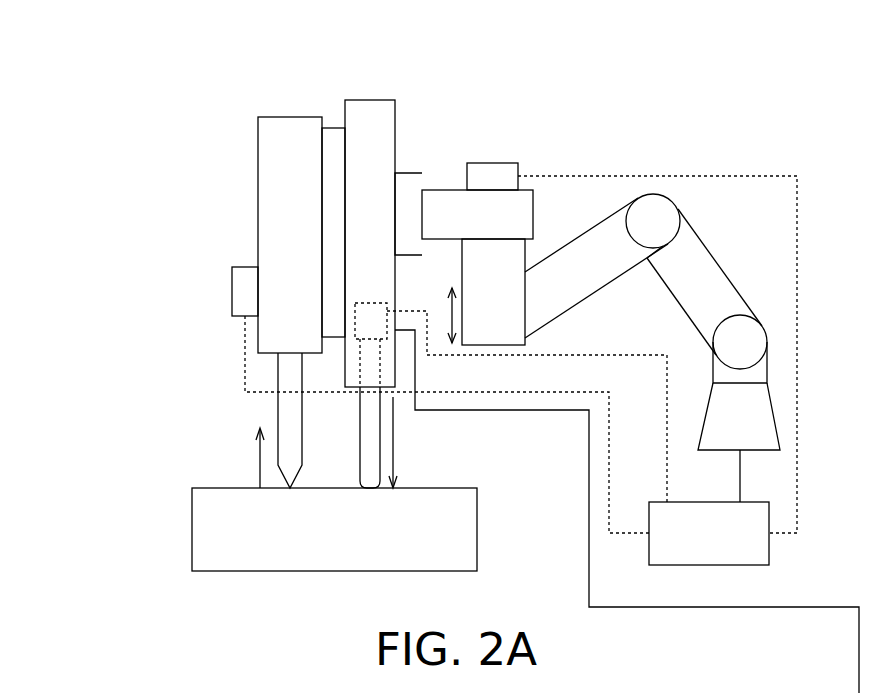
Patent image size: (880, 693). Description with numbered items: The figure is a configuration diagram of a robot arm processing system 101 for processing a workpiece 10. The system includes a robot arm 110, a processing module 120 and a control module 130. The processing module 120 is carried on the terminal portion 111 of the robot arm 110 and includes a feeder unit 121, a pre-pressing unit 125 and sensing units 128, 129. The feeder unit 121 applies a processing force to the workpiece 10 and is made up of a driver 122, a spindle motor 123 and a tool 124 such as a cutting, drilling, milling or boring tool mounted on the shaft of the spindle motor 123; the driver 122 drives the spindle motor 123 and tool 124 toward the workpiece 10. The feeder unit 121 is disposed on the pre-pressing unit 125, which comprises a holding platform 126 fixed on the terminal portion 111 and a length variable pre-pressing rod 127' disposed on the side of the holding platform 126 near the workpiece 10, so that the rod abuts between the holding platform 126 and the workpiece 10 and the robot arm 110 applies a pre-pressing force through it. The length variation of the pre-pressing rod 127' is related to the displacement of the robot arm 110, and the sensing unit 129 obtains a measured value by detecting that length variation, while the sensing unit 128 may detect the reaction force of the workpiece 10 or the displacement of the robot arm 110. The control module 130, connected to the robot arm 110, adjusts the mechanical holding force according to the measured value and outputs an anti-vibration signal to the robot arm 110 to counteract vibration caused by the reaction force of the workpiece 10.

The robot arm processing system 101 is at (184, 28).
The workpiece 10 is at (477, 527).
The robot arm 110 is at (750, 214).
The terminal portion 111 is at (437, 203).
The processing module 120 is at (240, 113).
The feeder unit 121 is at (89, 125).
The driver 122 is at (334, 136).
The spindle motor 123 is at (287, 131).
The tool 124 is at (285, 411).
The pre-pressing unit 125 is at (89, 225).
The holding platform 126 is at (375, 126).
The length variable pre-pressing rod 127' is at (406, 413).
The sensing unit 128 is at (247, 267).
The sensing unit 129 is at (370, 303).
The control module 130 is at (709, 565).